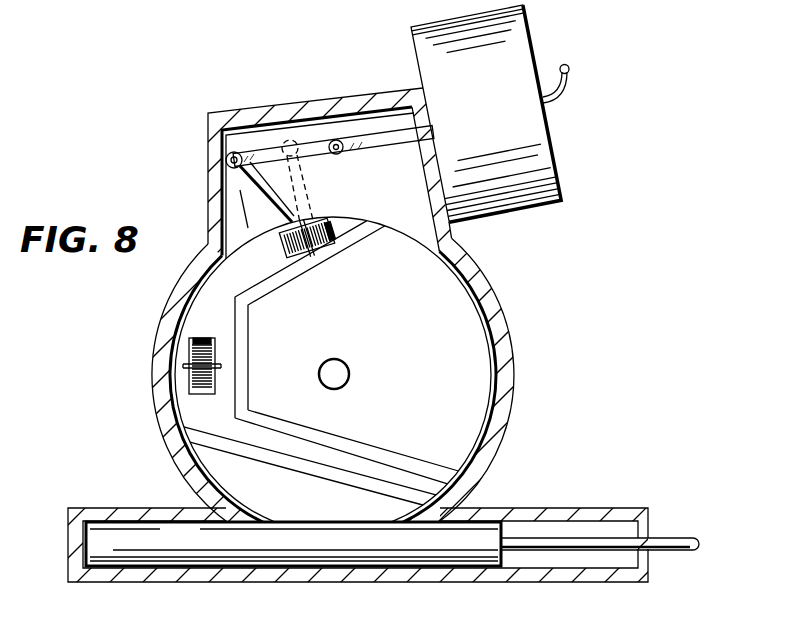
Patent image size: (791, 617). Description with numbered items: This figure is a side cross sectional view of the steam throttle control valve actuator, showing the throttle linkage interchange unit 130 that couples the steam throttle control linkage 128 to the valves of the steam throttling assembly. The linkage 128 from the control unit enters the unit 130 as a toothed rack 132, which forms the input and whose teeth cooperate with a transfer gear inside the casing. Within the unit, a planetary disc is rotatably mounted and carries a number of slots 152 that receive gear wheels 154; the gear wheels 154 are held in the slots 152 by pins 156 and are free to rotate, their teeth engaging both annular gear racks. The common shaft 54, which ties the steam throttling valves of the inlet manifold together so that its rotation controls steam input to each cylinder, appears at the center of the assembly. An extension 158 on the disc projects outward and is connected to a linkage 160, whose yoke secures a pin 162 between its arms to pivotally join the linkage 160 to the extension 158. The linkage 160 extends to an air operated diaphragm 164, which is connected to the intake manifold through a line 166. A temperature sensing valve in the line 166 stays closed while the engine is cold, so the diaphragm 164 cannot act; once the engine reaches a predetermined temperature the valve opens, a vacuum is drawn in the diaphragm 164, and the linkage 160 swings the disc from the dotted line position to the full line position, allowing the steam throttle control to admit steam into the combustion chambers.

The common shaft 54 is at (347, 358).
The steam throttle control linkage 128 is at (553, 506).
The throttle linkage interchange unit 130 is at (500, 292).
The toothed rack 132 is at (124, 543).
The slots 152 is at (283, 250).
The gear wheels 154 is at (337, 232).
The pins 156 is at (310, 221).
The extension 158 is at (247, 190).
The linkage 160 is at (250, 153).
The pin 162 is at (226, 160).
The air operated diaphragm 164 is at (553, 143).
The line 166 is at (566, 98).